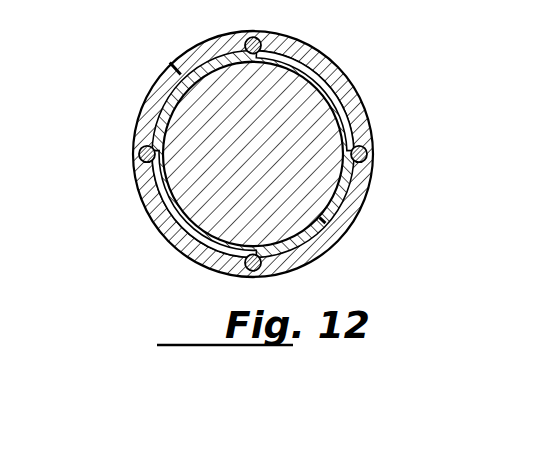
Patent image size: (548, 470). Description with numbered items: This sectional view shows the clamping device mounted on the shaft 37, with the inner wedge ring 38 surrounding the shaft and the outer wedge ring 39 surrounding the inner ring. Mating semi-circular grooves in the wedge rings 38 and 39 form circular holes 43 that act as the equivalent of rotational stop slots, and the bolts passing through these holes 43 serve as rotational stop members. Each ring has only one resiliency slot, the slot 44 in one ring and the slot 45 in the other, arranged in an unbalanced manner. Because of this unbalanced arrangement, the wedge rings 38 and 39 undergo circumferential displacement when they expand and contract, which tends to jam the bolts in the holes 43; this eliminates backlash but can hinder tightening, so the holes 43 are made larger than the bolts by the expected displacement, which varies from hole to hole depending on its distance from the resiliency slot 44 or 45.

The shaft 37 is at (217, 190).
The inner wedge ring 38 is at (346, 188).
The outer wedge ring 39 is at (358, 88).
The circular holes 43 is at (261, 39).
The resiliency slot 44 is at (172, 63).
The resiliency slot 45 is at (326, 225).